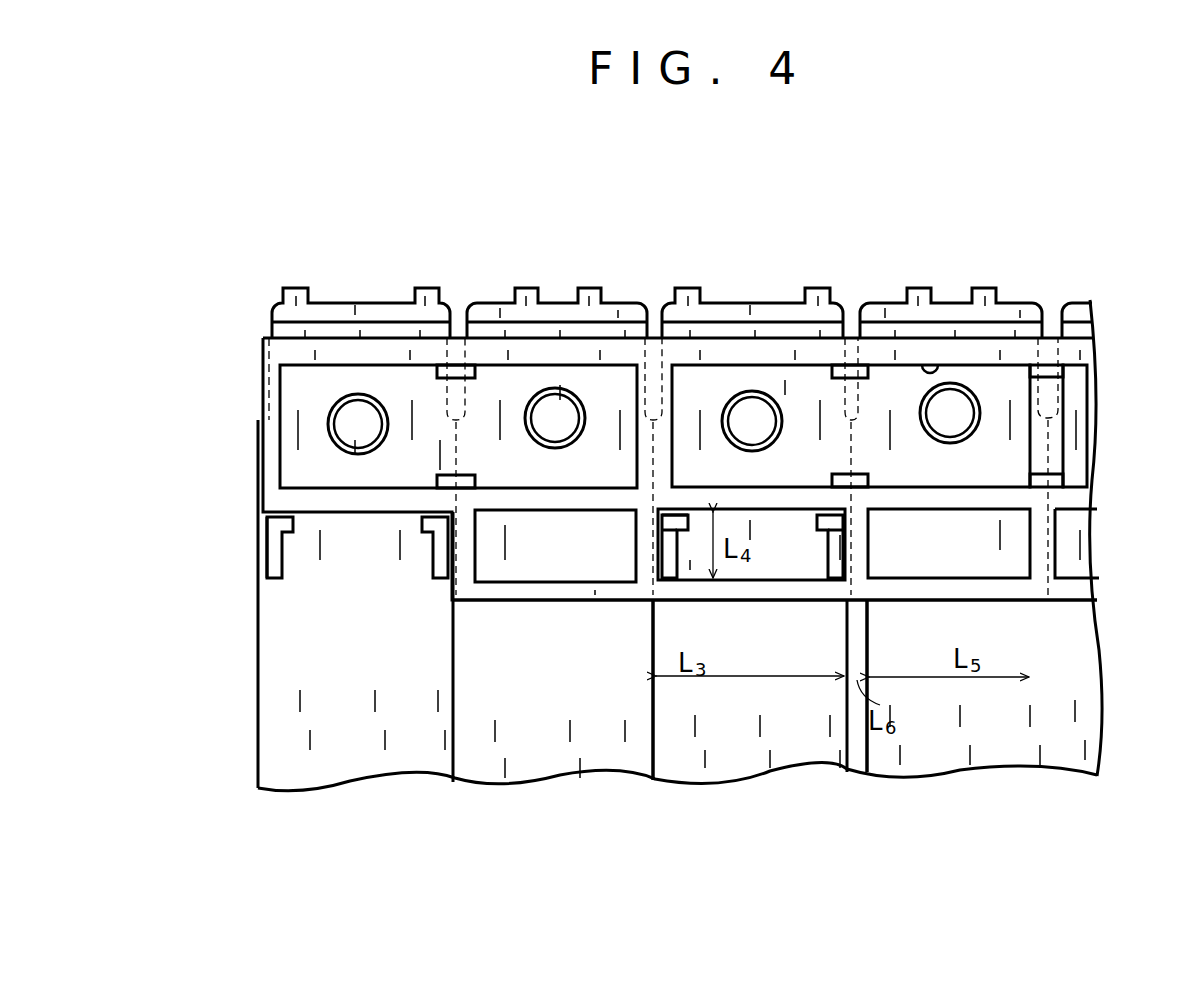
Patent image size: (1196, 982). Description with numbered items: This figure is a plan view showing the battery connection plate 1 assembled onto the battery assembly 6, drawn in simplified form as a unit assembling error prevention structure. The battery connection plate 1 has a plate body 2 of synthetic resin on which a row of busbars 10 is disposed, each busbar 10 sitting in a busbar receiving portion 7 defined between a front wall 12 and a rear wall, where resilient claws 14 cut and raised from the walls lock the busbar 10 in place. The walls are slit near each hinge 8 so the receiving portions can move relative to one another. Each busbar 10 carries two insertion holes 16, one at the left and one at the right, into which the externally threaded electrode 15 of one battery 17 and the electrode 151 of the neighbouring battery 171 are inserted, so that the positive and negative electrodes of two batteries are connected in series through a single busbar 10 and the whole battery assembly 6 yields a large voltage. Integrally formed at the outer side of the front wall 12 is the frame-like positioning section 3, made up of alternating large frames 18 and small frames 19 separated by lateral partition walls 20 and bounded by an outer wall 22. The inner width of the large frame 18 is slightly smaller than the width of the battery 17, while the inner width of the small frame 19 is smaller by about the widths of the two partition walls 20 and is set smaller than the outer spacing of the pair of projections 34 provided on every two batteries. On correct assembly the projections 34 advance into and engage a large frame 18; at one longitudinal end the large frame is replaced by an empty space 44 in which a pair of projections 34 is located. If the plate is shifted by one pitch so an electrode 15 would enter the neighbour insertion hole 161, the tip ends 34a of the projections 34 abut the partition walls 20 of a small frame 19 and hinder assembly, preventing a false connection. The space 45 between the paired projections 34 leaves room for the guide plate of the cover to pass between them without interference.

The battery connection plate 1 is at (1118, 492).
The plate body 2 is at (262, 397).
The frame-like positioning section 3 is at (507, 612).
The battery assembly 6 is at (1062, 270).
The busbar receiving portion 7 is at (937, 364).
The hinge 8 is at (1054, 437).
The busbar 10 is at (742, 375).
The front wall 12 is at (772, 500).
The resilient claw 14 is at (853, 478).
The externally threaded electrode 15 is at (770, 423).
The electrode 151 is at (960, 421).
The insertion hole 16 is at (722, 418).
The neighbor insertion hole 161 is at (921, 414).
The battery 17 is at (723, 763).
The battery 171 is at (905, 765).
The large frame 18 is at (783, 562).
The small frame 19 is at (920, 562).
The partition wall 20 is at (868, 522).
The outer wall 22 is at (741, 591).
The projection 34 is at (432, 560).
The tip end 34a is at (673, 550).
The empty space 44 is at (325, 541).
The space 45 is at (672, 538).